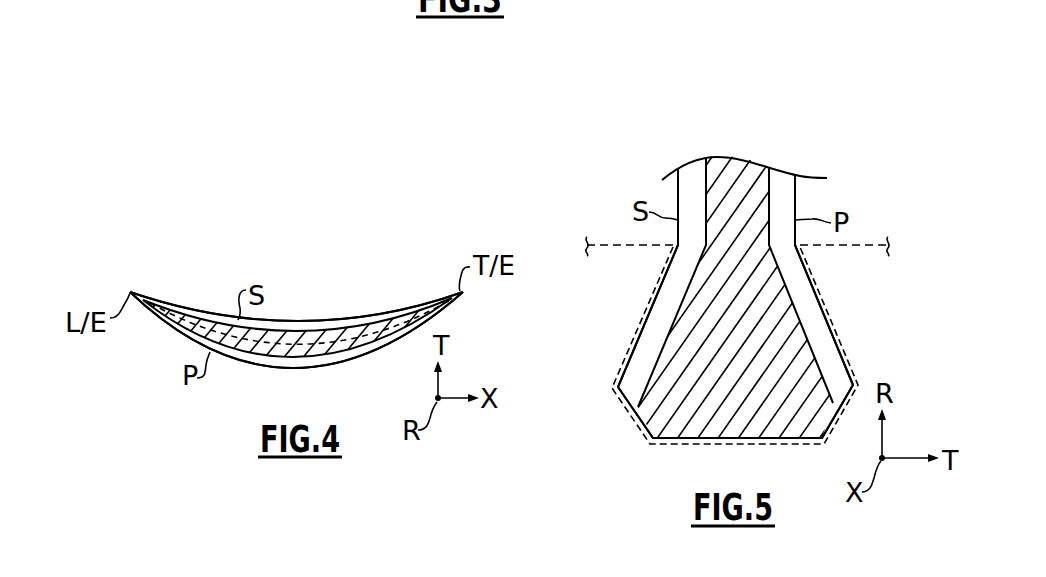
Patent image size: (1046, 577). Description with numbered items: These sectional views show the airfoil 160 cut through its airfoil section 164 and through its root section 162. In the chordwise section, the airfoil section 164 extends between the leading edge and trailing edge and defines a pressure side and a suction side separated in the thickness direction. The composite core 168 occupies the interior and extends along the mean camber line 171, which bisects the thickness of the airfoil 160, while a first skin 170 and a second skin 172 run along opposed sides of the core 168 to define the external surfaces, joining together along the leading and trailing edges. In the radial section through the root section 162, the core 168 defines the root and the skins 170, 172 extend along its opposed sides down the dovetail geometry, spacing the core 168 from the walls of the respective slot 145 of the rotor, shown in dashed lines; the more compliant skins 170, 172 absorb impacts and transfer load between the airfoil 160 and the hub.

In FIG. 4, the airfoil 160 is at (121, 246).
In FIG. 5, the airfoil 160 is at (625, 110).
In FIG. 4, the airfoil section 164 is at (172, 305).
In FIG. 5, the airfoil section 164 is at (796, 193).
In FIG. 4, the composite core 168 is at (297, 329).
In FIG. 5, the composite core 168 is at (740, 165).
In FIG. 4, the first skin 170 is at (348, 328).
In FIG. 5, the first skin 170 is at (698, 180).
In FIG. 4, the mean camber line 171 is at (276, 338).
In FIG. 4, the second skin 172 is at (348, 366).
In FIG. 5, the second skin 172 is at (782, 180).
In FIG. 5, the slot 145 is at (824, 297).
In FIG. 5, the root section 162 is at (840, 348).